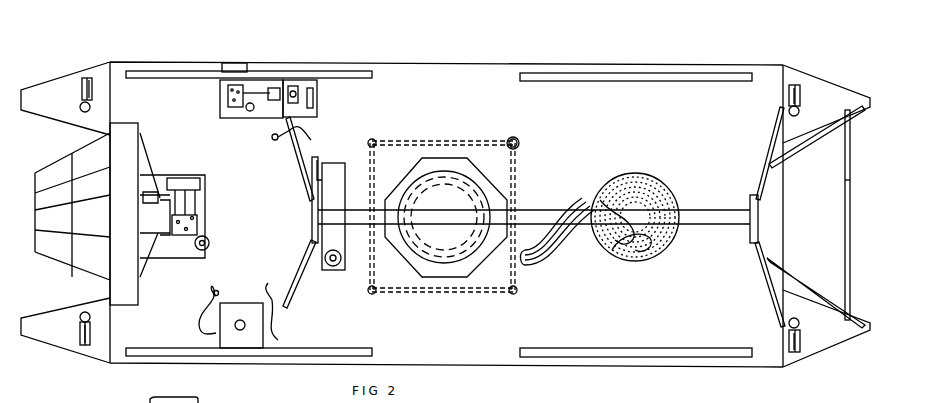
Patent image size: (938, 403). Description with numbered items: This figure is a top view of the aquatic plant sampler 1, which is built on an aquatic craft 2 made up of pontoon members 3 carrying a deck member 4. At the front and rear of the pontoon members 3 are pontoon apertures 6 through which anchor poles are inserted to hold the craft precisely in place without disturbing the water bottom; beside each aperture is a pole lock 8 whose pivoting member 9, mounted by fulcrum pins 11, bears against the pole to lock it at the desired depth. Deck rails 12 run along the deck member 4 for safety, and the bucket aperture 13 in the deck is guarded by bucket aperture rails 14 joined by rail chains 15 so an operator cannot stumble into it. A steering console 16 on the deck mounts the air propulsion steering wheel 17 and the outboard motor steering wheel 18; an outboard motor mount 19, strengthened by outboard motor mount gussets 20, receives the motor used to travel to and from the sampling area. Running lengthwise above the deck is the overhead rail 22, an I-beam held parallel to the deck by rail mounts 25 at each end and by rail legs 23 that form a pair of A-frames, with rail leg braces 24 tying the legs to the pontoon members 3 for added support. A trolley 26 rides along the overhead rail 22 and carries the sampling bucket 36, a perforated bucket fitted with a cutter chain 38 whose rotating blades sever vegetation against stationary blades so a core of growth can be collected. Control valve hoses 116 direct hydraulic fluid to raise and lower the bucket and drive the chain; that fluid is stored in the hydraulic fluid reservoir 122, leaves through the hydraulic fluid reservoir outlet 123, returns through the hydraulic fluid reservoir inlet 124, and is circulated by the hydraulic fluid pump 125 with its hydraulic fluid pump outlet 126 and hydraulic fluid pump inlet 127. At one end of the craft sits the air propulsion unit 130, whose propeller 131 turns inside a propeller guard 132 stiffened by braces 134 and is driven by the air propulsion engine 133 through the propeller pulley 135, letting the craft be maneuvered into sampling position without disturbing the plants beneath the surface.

The aquatic plant sampler 1 is at (235, 46).
The aquatic craft 2 is at (76, 137).
The pontoon members 3 is at (64, 100).
The deck member 4 is at (429, 123).
The pontoon apertures 6 is at (91, 107).
The pole locks 8 is at (77, 82).
The pivoting member 9 is at (90, 80).
The fulcrum pins 11 is at (92, 95).
The deck rails 12 is at (345, 72).
The bucket aperture 13 is at (478, 175).
The bucket aperture rails 14 is at (372, 140).
The rail chains 15 is at (511, 139).
The steering console 16 is at (340, 196).
The air propulsion steering wheel 17 is at (326, 264).
The outboard motor steering wheel 18 is at (320, 178).
The outboard motor mount 19 is at (850, 195).
The outboard motor mount gussets 20 is at (848, 128).
The overhead rail 22 is at (748, 222).
The rail legs 23 is at (302, 173).
The rail leg braces 24 is at (798, 152).
The rail mounts 25 is at (312, 210).
The trolley 26 is at (600, 243).
The sampling bucket 36 is at (650, 188).
The cutter chain 38 is at (654, 259).
The control valve hoses 116 is at (557, 221).
The hydraulic fluid reservoir 122 is at (241, 326).
The hydraulic fluid reservoir outlet 123 is at (202, 310).
The hydraulic fluid reservoir inlet 124 is at (275, 327).
The hydraulic fluid pump 125 is at (310, 80).
The hydraulic fluid pump outlet 126 is at (313, 110).
The hydraulic fluid pump inlet 127 is at (275, 145).
The air propulsion unit 130 is at (27, 186).
The propeller 131 is at (160, 395).
The propeller guard 132 is at (134, 213).
The air propulsion engine 133 is at (200, 228).
The braces 134 is at (150, 178).
The propeller pulley 135 is at (185, 178).